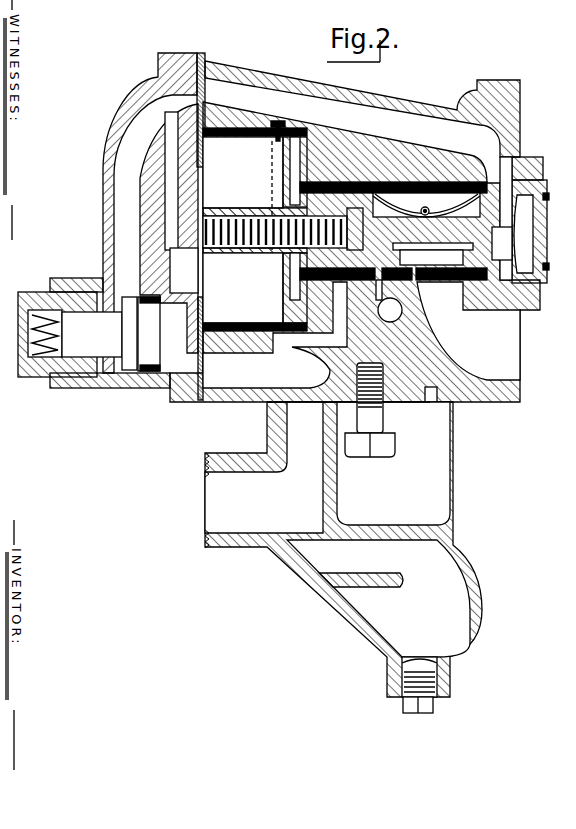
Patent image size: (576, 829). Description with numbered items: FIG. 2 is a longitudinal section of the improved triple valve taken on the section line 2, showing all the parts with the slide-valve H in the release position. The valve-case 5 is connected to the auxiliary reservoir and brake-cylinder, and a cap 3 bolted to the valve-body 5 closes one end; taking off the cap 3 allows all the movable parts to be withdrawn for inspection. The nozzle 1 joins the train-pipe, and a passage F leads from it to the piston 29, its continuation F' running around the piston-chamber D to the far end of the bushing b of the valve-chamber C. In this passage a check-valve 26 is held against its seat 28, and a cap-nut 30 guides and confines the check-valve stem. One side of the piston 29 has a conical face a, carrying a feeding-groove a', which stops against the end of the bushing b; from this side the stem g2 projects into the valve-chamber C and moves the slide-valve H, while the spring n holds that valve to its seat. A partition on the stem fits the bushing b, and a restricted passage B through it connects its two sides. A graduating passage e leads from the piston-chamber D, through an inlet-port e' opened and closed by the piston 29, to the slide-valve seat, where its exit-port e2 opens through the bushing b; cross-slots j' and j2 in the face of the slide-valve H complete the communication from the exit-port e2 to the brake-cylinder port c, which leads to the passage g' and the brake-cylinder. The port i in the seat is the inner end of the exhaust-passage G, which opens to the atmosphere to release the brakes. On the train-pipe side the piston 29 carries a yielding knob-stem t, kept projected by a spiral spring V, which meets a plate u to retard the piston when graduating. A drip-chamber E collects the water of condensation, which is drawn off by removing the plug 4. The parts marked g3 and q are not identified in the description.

The cap 3 is at (135, 102).
The valve-case 5 is at (293, 82).
The continuation of passage F F' is at (305, 156).
The piston-stem g2 is at (348, 183).
The bushing b is at (410, 181).
The valve-chamber C is at (426, 205).
The spring n is at (431, 210).
The restricted passage B is at (500, 207).
The inlet-port e' is at (263, 220).
The feeding-groove a' is at (276, 172).
The piston-chamber D is at (243, 172).
The yielding knob-stem t is at (228, 214).
The spring cap g3 is at (358, 246).
The plate u is at (170, 243).
The spiral spring V is at (212, 235).
The conical face a is at (315, 269).
The piston 29 is at (290, 297).
The check-valve 26 is at (133, 337).
The check-valve seat 28 is at (152, 366).
The cap-nut 30 is at (37, 303).
The section line 2 is at (33, 337).
The passage F is at (275, 335).
The graduating passage e is at (295, 361).
The exit-port e2 is at (378, 290).
The exhaust-passage G is at (390, 322).
The brake-cylinder passage g' is at (468, 357).
The slide-valve H is at (518, 220).
The groove q is at (502, 243).
The cross-slot j2 is at (410, 243).
The exhaust port i is at (433, 277).
The brake-cylinder port c is at (437, 280).
The cross-slot j' is at (458, 286).
The drip-chamber E is at (343, 549).
The nozzle 1 is at (212, 490).
The plug 4 is at (425, 702).